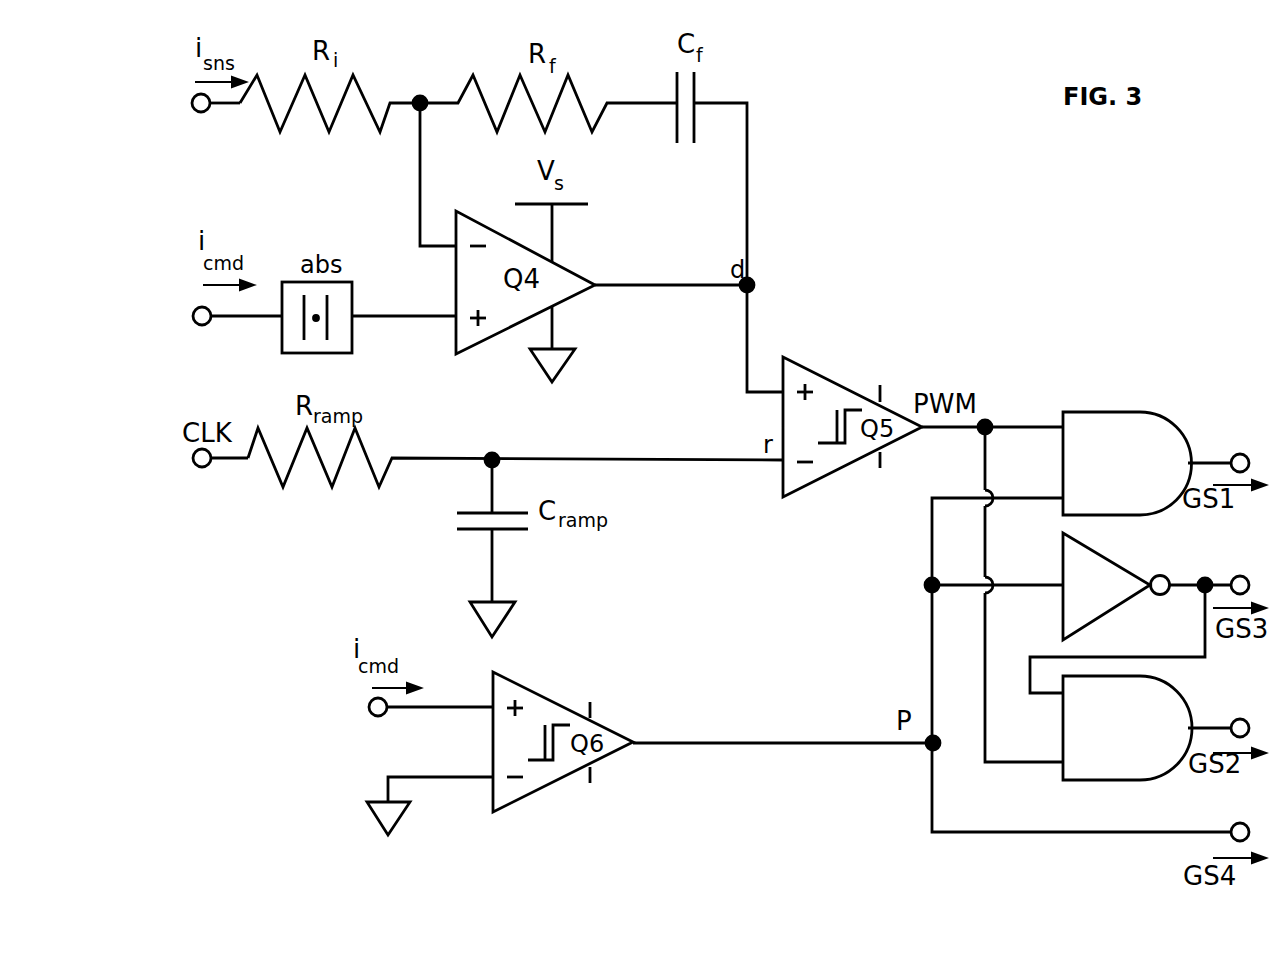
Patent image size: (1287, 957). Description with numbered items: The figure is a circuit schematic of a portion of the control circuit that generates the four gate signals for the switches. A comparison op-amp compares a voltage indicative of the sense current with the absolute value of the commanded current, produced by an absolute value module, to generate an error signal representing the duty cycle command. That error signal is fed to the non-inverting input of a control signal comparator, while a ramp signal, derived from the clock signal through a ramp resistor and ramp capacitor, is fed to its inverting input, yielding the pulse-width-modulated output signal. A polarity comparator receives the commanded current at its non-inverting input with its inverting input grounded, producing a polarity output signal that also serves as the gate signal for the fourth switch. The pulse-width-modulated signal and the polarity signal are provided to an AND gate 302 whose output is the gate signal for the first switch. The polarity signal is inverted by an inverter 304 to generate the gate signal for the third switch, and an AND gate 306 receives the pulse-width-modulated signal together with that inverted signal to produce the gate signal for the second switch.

The AND gate 302 is at (1156, 463).
The inverter 304 is at (1156, 586).
The AND gate 306 is at (1156, 728).